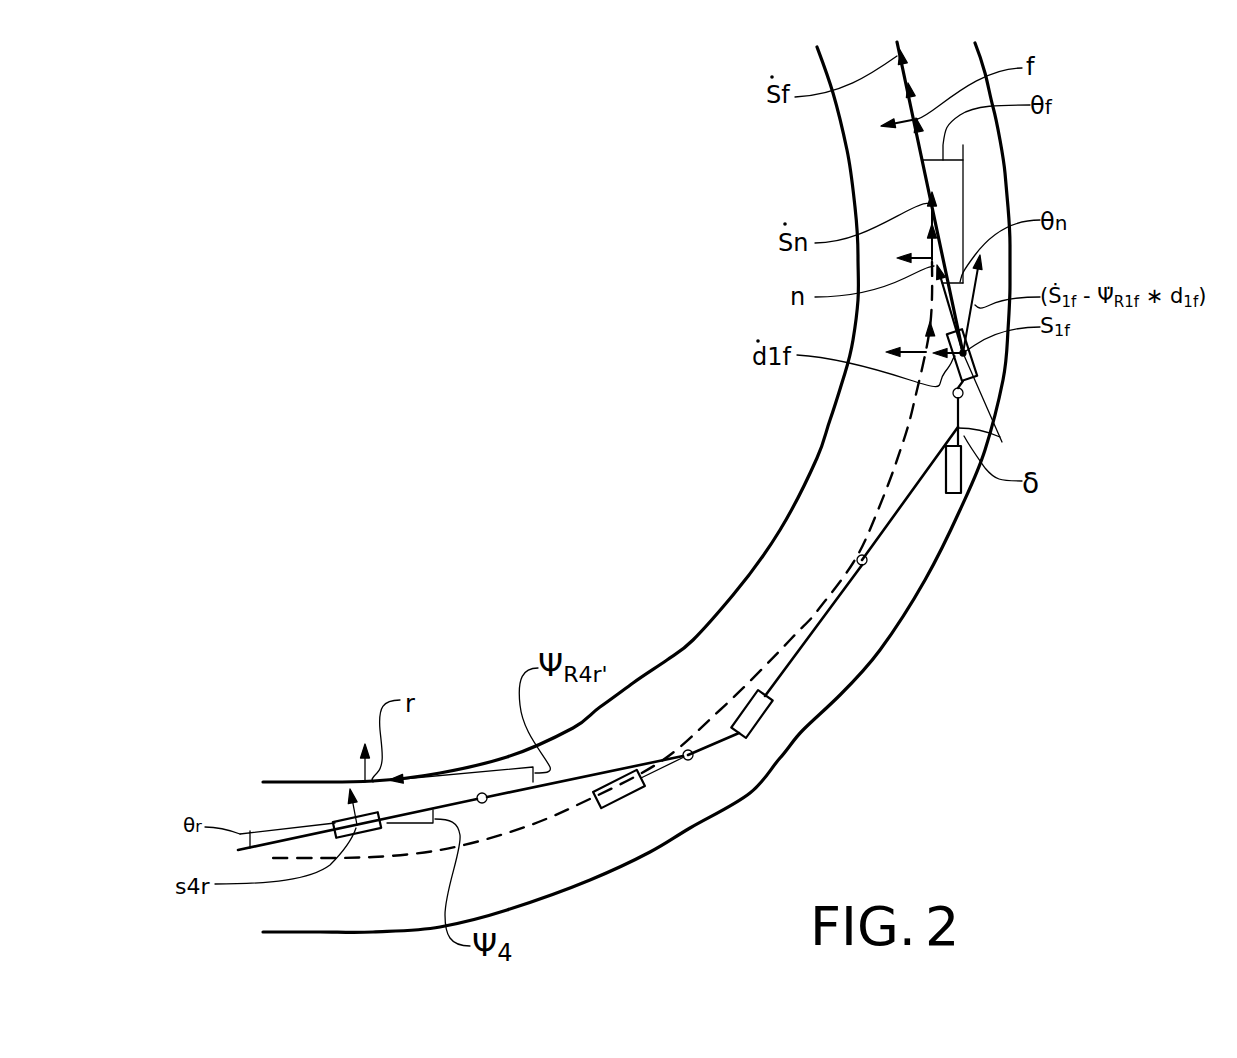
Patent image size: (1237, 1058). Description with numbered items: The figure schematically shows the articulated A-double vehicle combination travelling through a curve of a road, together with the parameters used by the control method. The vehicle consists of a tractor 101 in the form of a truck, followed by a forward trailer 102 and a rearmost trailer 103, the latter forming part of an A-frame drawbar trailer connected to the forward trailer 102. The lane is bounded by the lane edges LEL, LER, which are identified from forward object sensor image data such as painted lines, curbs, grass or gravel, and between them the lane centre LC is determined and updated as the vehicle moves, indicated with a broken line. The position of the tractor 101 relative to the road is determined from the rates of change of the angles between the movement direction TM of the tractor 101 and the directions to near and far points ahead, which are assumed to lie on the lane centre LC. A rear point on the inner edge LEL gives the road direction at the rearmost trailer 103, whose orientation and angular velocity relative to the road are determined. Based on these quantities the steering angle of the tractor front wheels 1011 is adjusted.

The tractor 101 is at (963, 393).
The tractor front wheels 1011 is at (977, 367).
The forward trailer 102 is at (867, 563).
The rearmost trailer 103 is at (487, 800).
The left lane edge LEL is at (831, 421).
The right lane edge LER is at (950, 533).
The lane centre LC is at (877, 512).
The movement direction of the tractor TM is at (965, 208).